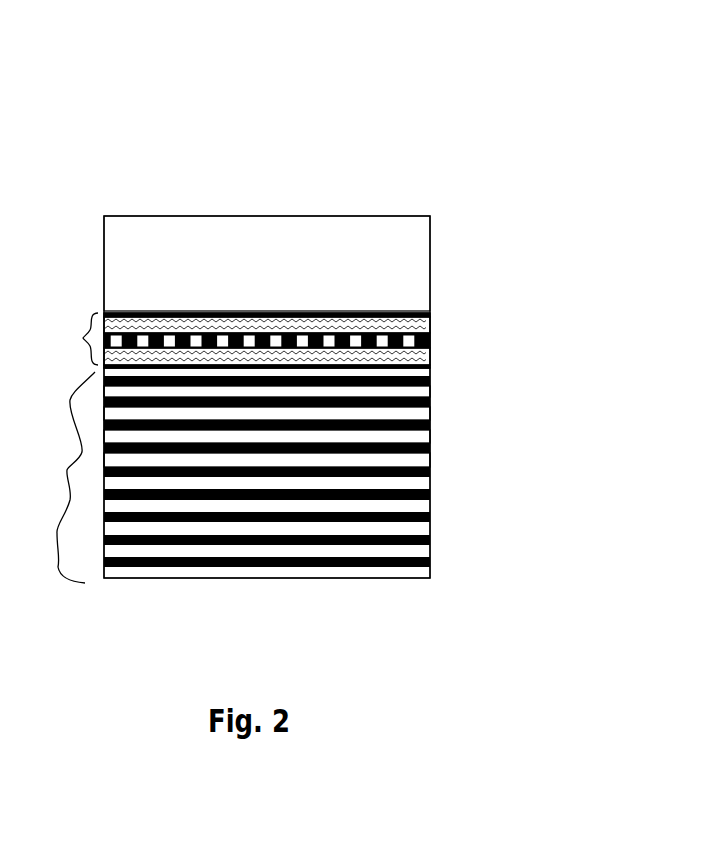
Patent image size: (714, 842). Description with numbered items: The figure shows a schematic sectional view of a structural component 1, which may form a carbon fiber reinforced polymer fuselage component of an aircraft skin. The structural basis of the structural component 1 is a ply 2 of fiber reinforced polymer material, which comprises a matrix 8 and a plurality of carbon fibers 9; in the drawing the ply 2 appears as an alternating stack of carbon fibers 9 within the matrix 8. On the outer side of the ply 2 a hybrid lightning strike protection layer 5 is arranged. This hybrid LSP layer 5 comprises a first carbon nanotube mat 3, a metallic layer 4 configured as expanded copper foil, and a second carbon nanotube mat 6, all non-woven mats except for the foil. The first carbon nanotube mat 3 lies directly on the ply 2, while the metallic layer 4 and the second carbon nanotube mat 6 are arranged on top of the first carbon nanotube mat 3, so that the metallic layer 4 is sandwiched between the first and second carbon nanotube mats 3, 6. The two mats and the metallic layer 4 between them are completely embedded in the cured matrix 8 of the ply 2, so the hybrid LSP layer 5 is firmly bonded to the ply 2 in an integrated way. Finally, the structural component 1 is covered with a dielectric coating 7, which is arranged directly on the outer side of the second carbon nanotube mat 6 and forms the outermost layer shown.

The structural component 1 is at (520, 140).
The ply of fiber reinforced polymer material 2 is at (230, 475).
The first carbon nanotube mat 3 is at (418, 358).
The metallic layer 4 is at (432, 338).
The hybrid lightning strike protection layer 5 is at (244, 340).
The second carbon nanotube mat 6 is at (430, 318).
The dielectric coating 7 is at (394, 266).
The matrix 8 is at (422, 392).
The carbon fibers 9 is at (422, 410).